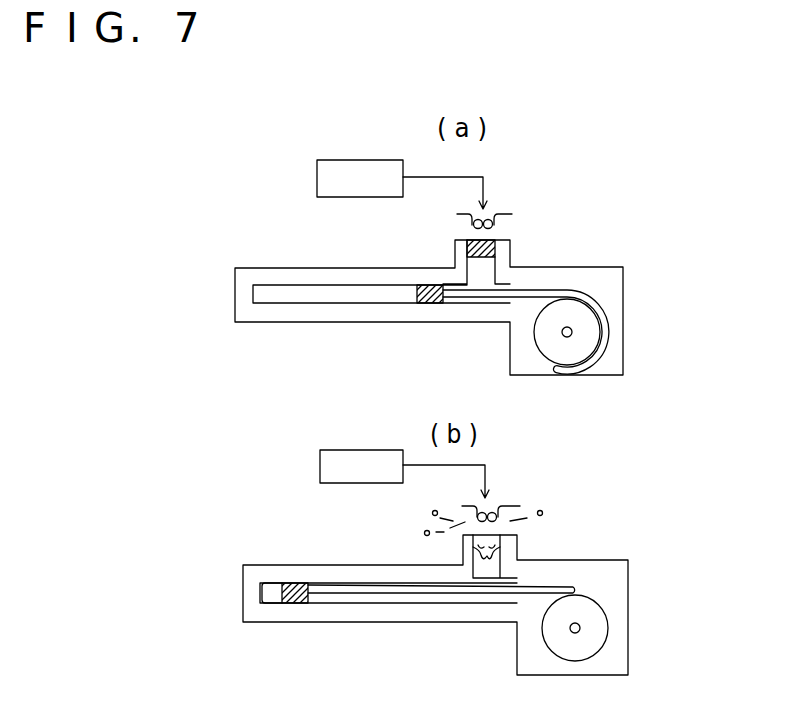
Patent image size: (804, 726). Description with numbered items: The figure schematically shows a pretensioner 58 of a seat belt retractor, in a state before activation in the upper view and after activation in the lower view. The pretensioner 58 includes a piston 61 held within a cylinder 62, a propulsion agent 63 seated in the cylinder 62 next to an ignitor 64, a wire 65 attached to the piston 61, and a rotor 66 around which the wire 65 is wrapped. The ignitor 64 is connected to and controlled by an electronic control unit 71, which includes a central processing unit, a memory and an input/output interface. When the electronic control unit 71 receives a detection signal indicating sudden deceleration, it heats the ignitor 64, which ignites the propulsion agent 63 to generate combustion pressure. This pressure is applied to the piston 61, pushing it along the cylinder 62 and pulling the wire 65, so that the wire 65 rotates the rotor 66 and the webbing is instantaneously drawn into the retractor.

The pretensioner 58 is at (260, 210).
The piston 61 is at (430, 300).
The cylinder 62 is at (370, 277).
The propulsion agent 63 is at (497, 253).
The ignitor 64 is at (487, 210).
The wire 65 is at (603, 305).
The rotor 66 is at (547, 333).
The electronic control unit (ECU) 71 is at (317, 170).